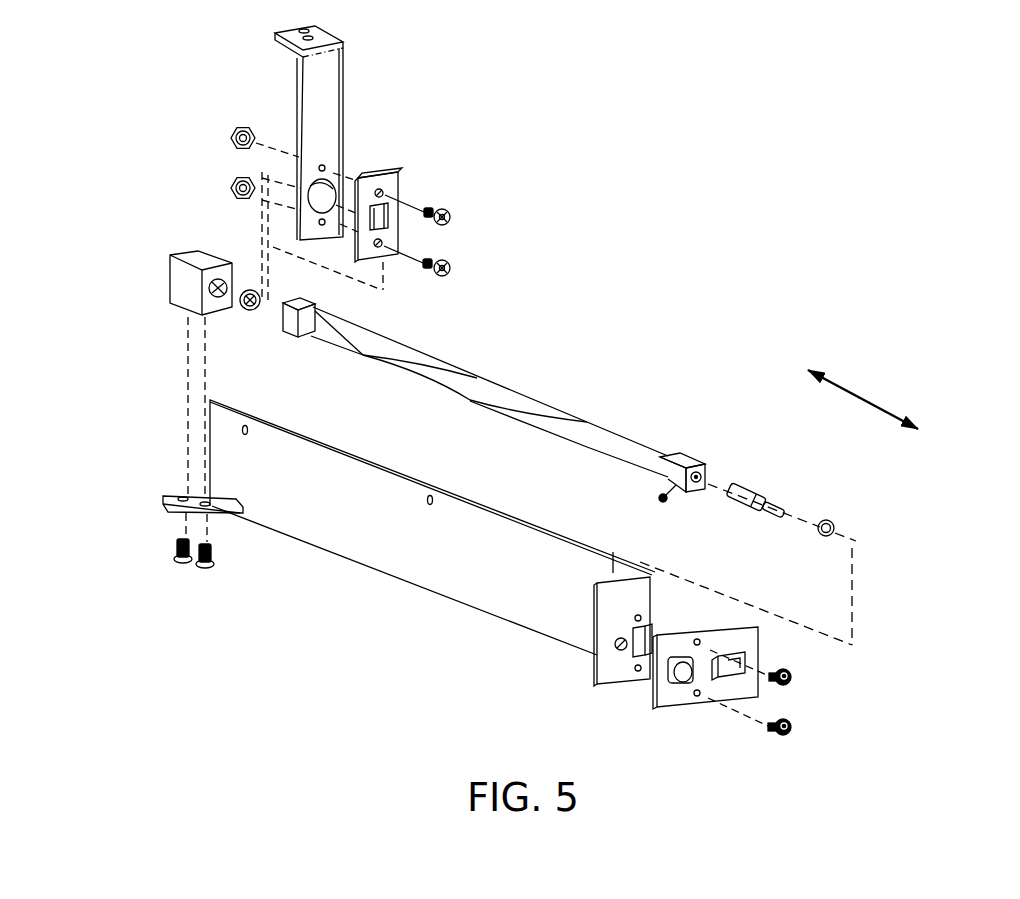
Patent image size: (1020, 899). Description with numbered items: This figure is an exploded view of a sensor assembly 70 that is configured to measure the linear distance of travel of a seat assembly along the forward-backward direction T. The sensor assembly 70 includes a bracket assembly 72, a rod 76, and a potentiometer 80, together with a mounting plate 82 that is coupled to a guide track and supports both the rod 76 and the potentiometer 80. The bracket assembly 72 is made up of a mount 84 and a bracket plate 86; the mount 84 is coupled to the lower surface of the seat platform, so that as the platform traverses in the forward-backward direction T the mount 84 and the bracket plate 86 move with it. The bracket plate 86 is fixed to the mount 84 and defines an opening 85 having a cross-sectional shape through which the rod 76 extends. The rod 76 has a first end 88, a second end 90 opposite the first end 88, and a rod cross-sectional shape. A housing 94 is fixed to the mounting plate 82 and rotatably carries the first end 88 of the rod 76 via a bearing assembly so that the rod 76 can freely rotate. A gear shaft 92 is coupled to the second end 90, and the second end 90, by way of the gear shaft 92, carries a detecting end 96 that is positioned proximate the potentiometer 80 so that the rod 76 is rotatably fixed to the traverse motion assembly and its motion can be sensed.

The sensor assembly 70 is at (630, 307).
The bracket assembly 72 is at (213, 78).
The rod 76 is at (482, 388).
The potentiometer 80 is at (737, 675).
The mounting plate 82 is at (331, 477).
The mount 84 is at (332, 88).
The opening 85 is at (395, 227).
The bracket plate 86 is at (398, 184).
The first end 88 is at (291, 339).
The second end 90 is at (691, 443).
The gear shaft 92 is at (745, 500).
The housing 94 is at (178, 275).
The detecting end 96 is at (690, 680).
The forward-backward direction T is at (853, 392).